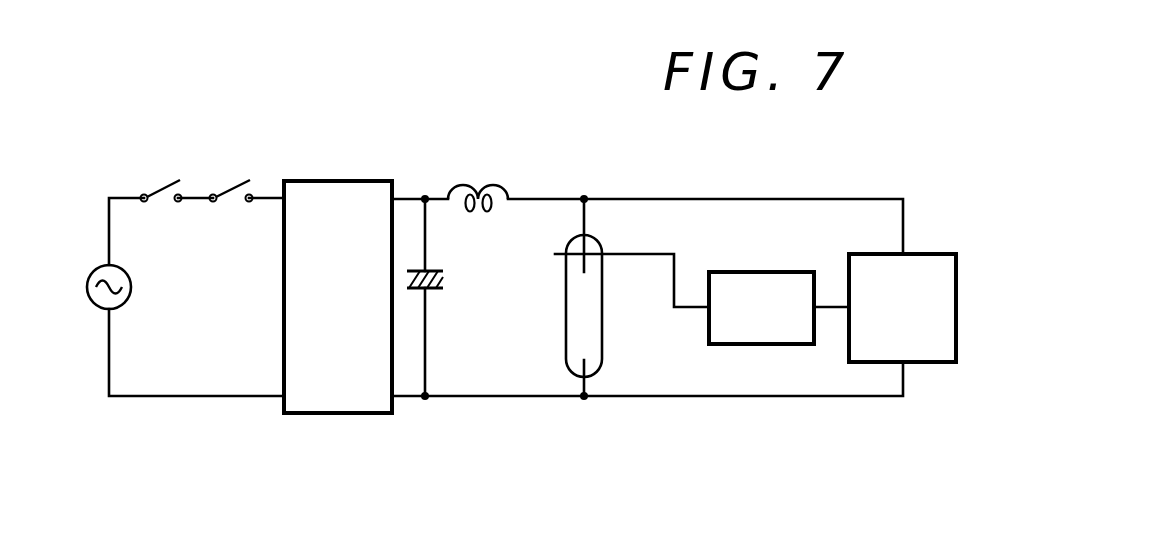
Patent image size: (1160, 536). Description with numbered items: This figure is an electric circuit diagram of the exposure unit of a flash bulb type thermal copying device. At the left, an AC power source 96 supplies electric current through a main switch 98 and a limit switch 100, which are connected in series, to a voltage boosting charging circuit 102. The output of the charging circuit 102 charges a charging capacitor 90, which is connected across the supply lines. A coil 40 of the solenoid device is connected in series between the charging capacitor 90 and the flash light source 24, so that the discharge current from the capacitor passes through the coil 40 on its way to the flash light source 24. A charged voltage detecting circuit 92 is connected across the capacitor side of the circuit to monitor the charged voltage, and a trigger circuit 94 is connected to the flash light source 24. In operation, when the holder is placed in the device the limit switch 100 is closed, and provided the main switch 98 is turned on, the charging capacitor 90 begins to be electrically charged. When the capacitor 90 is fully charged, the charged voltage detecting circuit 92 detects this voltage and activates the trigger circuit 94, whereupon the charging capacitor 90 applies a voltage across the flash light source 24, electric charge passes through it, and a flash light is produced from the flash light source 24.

The flash light source 24 is at (603, 327).
The coil 40 is at (482, 185).
The charging capacitor 90 is at (443, 282).
The charged voltage detecting circuit 92 is at (930, 253).
The trigger circuit 94 is at (750, 271).
The AC power source 96 is at (132, 283).
The main switch 98 is at (160, 185).
The limit switch 100 is at (230, 182).
The voltage boosting charging circuit 102 is at (337, 181).